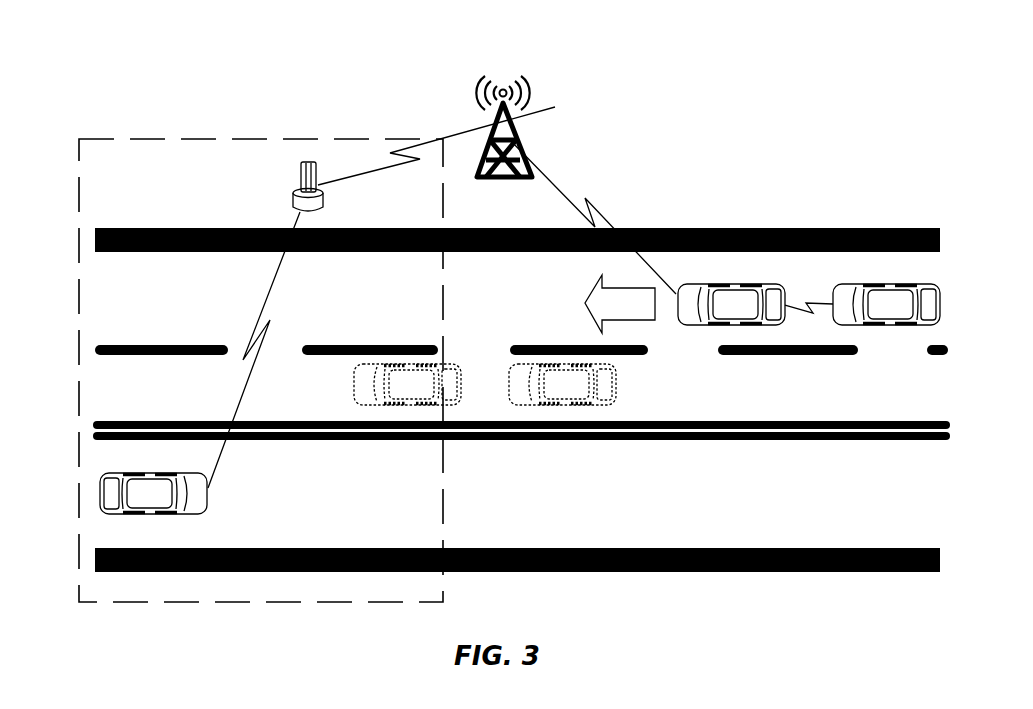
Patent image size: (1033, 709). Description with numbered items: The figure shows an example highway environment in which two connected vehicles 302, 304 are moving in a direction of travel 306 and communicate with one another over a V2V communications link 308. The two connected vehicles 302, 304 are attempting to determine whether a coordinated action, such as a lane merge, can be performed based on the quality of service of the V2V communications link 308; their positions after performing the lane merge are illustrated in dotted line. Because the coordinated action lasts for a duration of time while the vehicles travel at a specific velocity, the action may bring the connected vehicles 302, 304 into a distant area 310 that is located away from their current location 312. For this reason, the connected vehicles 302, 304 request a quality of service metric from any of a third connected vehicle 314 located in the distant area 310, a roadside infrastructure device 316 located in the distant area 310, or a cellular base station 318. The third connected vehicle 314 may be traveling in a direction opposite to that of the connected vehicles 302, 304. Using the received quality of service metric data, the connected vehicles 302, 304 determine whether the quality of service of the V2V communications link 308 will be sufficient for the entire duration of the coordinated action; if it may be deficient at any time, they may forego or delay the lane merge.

The connected vehicle 302 is at (733, 283).
The connected vehicle 304 is at (883, 285).
The direction of travel 306 is at (620, 304).
The V2V communications link 308 is at (807, 303).
The distant area 310 is at (410, 138).
The current location 312 is at (829, 160).
The third connected vehicle 314 is at (108, 479).
The roadside infrastructure device 316 is at (300, 167).
The cellular base station 318 is at (531, 126).